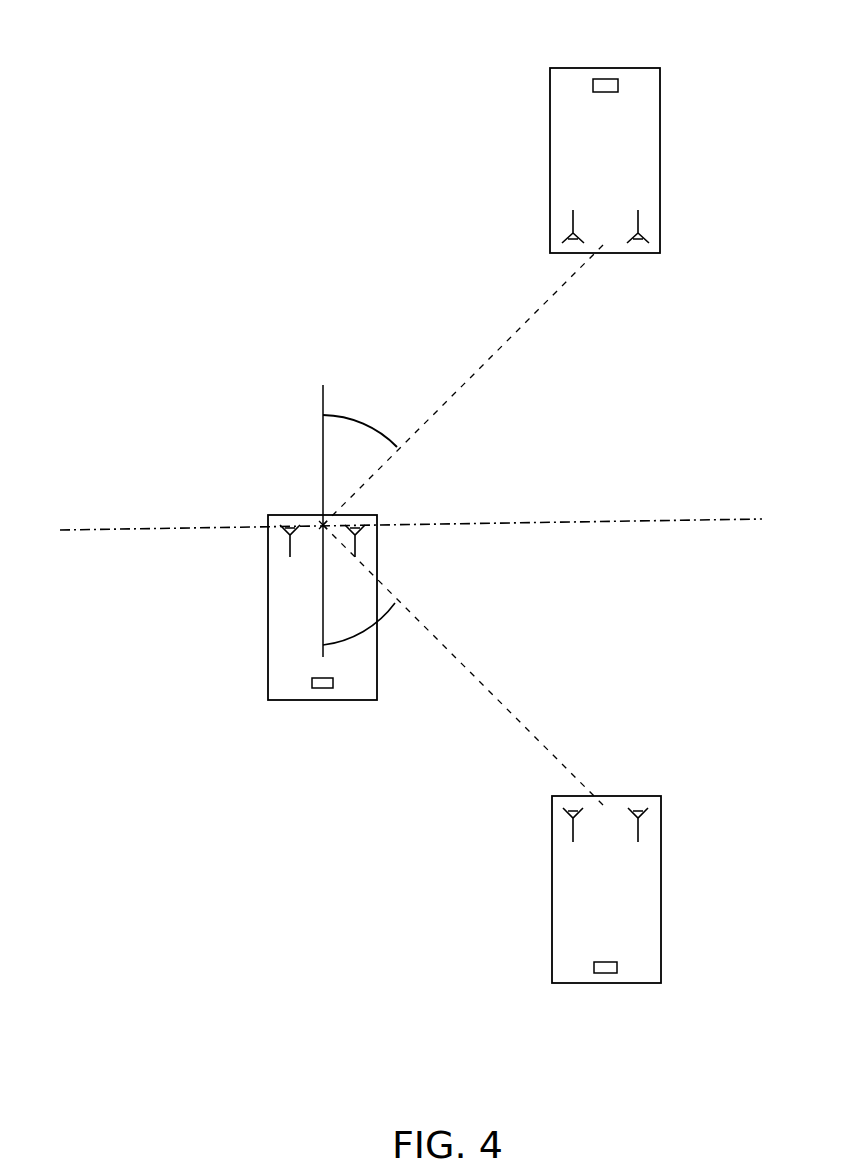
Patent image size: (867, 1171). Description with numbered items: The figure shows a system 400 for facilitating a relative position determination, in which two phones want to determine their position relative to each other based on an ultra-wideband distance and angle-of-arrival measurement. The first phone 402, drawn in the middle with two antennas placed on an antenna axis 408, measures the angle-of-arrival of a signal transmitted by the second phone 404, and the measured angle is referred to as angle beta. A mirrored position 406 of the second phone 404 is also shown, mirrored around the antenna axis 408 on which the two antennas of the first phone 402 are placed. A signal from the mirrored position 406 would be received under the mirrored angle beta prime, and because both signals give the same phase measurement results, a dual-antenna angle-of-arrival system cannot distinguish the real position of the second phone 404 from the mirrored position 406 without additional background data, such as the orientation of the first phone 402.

The system for facilitating a relative position determination 400 is at (356, 158).
The first phone 402 is at (268, 593).
The second phone 404 is at (551, 162).
The mirrored position of the second phone 406 is at (551, 893).
The antenna axis 408 is at (673, 520).